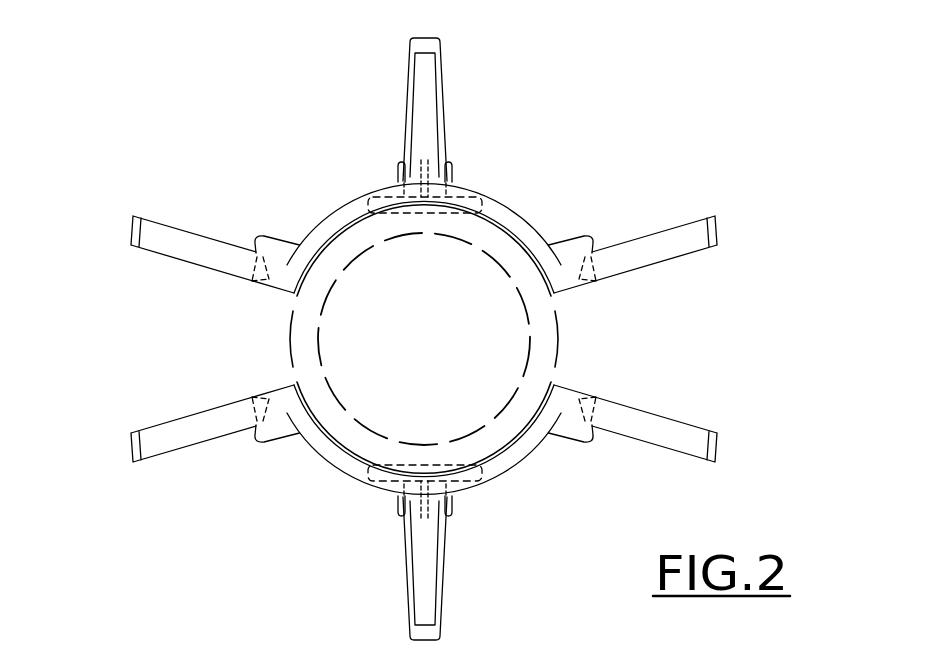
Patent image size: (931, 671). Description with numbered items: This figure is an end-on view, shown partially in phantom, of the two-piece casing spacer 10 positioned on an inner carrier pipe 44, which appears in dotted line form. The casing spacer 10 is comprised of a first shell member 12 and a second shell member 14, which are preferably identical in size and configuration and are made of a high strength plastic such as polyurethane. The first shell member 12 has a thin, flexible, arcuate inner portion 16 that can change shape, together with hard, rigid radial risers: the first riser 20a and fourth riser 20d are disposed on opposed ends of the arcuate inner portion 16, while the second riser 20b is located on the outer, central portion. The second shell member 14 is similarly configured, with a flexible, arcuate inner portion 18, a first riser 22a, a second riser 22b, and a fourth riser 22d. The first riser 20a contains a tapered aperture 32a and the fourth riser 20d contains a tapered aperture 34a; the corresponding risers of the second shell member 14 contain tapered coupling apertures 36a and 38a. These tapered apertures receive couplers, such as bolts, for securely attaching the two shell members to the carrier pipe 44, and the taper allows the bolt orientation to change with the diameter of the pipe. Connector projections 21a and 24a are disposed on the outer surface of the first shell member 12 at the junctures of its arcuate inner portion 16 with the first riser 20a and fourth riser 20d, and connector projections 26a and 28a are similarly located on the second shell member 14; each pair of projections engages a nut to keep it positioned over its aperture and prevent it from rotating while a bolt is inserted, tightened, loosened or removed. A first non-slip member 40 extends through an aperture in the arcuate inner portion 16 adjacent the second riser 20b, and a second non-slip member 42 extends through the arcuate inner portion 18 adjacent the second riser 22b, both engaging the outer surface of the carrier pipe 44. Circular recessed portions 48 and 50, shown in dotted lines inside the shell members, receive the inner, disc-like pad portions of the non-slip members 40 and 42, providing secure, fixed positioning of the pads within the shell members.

The casing spacer 10 is at (260, 148).
The first shell member 12 is at (525, 167).
The second shell member 14 is at (320, 487).
The flexible, arcuate inner portion 16 is at (347, 217).
The flexible, arcuate inner portion 18 is at (518, 455).
The first riser 20a is at (170, 235).
The second riser 20b is at (418, 123).
The fourth riser 20d is at (645, 250).
The first riser 22a is at (200, 420).
The second riser 22b is at (425, 547).
The fourth riser 22d is at (648, 430).
The connector projection 21a is at (267, 240).
The connector projection 24a is at (575, 248).
The connector projection 26a is at (270, 433).
The connector projection 28a is at (578, 430).
The first aperture 32a is at (253, 282).
The third aperture 34a is at (595, 283).
The coupling aperture 36a is at (255, 412).
The coupling aperture 38a is at (590, 393).
The first non-slip member 40 is at (452, 167).
The second non-slip member 42 is at (455, 505).
The inner carrier pipe 44 is at (289, 325).
The circular recessed portion 48 is at (390, 198).
The circular recessed portion 50 is at (387, 478).